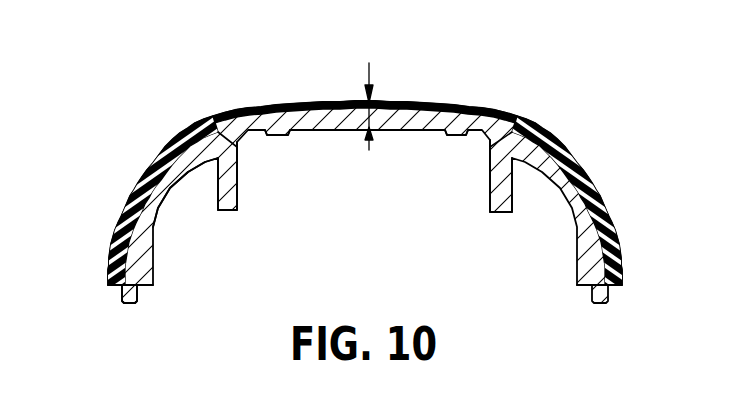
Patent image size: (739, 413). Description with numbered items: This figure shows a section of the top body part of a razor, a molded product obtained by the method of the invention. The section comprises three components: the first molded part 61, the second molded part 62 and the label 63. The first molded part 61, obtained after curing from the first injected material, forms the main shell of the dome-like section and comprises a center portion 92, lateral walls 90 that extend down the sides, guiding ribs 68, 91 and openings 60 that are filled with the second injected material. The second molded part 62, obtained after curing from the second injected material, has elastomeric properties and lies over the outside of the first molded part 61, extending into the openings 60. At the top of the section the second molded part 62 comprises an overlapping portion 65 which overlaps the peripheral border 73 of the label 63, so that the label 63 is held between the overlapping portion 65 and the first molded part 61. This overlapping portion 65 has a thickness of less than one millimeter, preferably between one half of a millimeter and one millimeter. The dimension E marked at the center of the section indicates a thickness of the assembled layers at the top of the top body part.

The openings 60 is at (184, 173).
The first molded part 61 is at (488, 133).
The second molded part 62 is at (548, 138).
The label 63 is at (456, 108).
The overlapping portion 65 is at (213, 117).
The guiding rib 68 is at (229, 201).
The peripheral border 73 is at (508, 130).
The lateral walls 90 is at (141, 266).
The guiding rib 91 is at (128, 296).
The center portion 92 is at (287, 124).
The thickness E is at (358, 98).